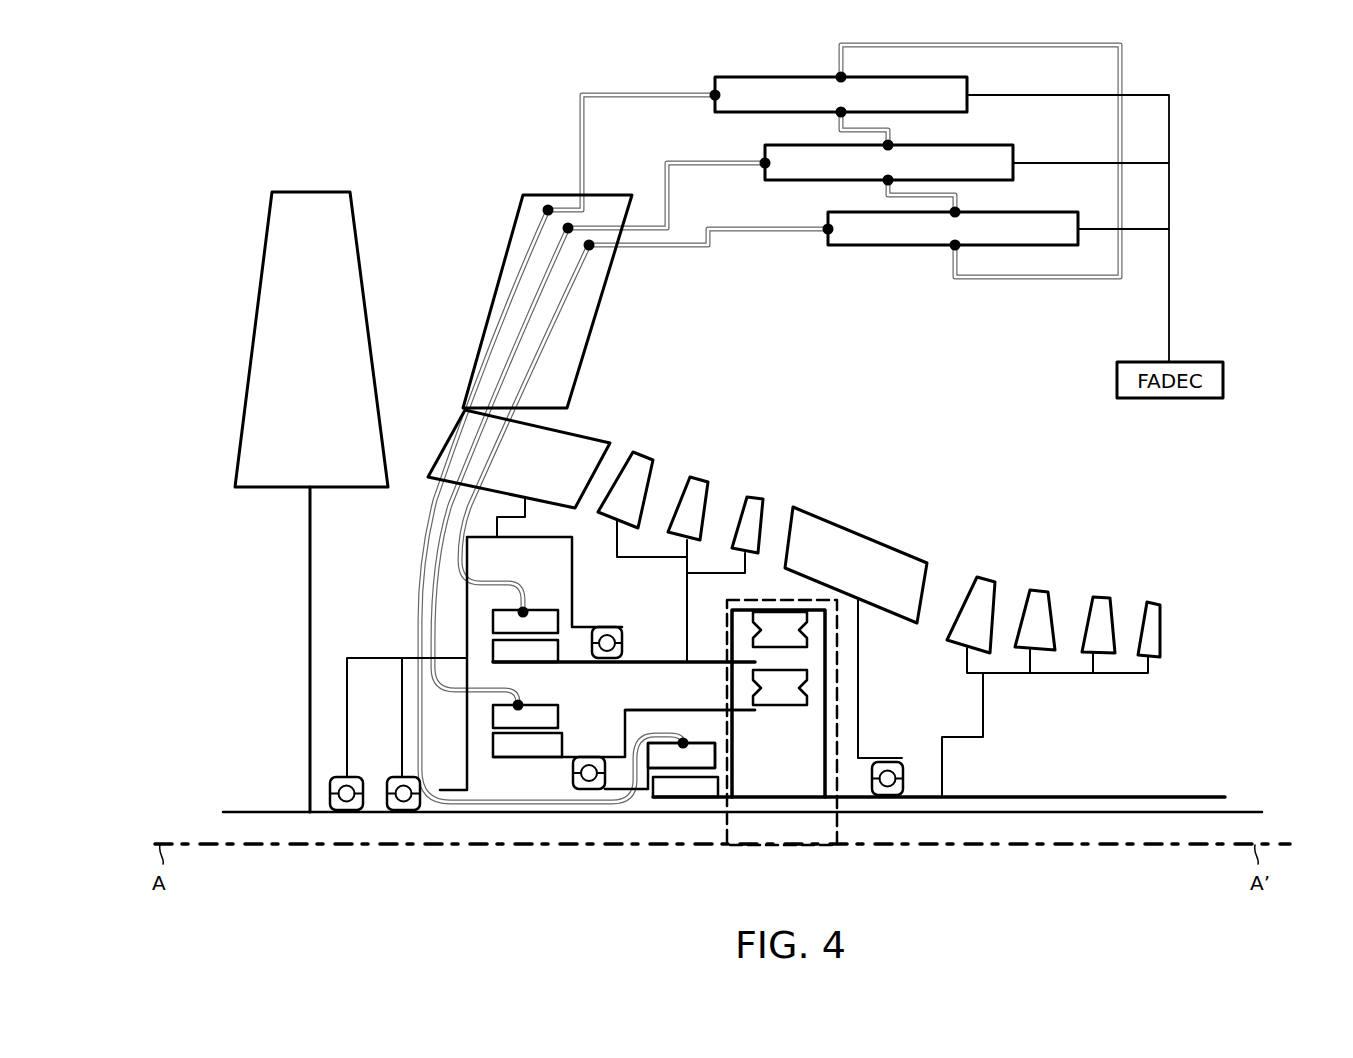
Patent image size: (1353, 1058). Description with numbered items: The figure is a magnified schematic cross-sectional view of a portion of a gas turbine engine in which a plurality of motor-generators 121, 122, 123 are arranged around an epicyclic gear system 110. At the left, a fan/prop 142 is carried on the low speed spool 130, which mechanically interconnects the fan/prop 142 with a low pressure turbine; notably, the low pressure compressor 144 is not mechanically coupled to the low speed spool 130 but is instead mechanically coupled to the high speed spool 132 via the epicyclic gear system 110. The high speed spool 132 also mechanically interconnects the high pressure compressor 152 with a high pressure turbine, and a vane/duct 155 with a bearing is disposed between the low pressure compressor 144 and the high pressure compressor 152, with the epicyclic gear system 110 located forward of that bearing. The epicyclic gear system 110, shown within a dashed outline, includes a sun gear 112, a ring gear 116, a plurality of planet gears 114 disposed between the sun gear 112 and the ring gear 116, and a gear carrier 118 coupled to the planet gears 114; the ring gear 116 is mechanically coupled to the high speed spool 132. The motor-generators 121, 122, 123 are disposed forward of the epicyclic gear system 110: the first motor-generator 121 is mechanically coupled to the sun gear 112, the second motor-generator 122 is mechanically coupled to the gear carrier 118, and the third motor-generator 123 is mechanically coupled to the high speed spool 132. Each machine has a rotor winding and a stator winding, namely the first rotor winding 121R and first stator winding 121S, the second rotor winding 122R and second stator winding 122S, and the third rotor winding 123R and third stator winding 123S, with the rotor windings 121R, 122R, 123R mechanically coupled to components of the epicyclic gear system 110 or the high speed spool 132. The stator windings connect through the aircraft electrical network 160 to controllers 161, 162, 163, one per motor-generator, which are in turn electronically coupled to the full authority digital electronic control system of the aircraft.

The epicyclic gear system 110 is at (843, 823).
The sun gear 112 is at (768, 747).
The plurality of planet gears 114 is at (792, 658).
The ring gear 116 is at (777, 613).
The gear carrier 118 is at (755, 657).
The first motor-generator 121 is at (503, 779).
The first rotor winding 121R is at (503, 748).
The first stator winding 121S is at (540, 717).
The second motor-generator 122 is at (470, 637).
The second rotor winding 122R is at (507, 648).
The second stator winding 122S is at (507, 620).
The third motor-generator 123 is at (665, 812).
The third rotor winding 123R is at (665, 813).
The third stator winding 123S is at (700, 758).
The low speed spool 130 is at (982, 815).
The high speed spool 132 is at (1060, 800).
The fan/prop 142 is at (280, 357).
The low pressure compressor 144 is at (805, 470).
The high pressure compressor 152 is at (1173, 573).
The vane/duct 155 is at (865, 553).
The aircraft electrical network 160 is at (505, 118).
The controller 161 is at (788, 160).
The controller 162 is at (853, 233).
The controller 163 is at (740, 100).